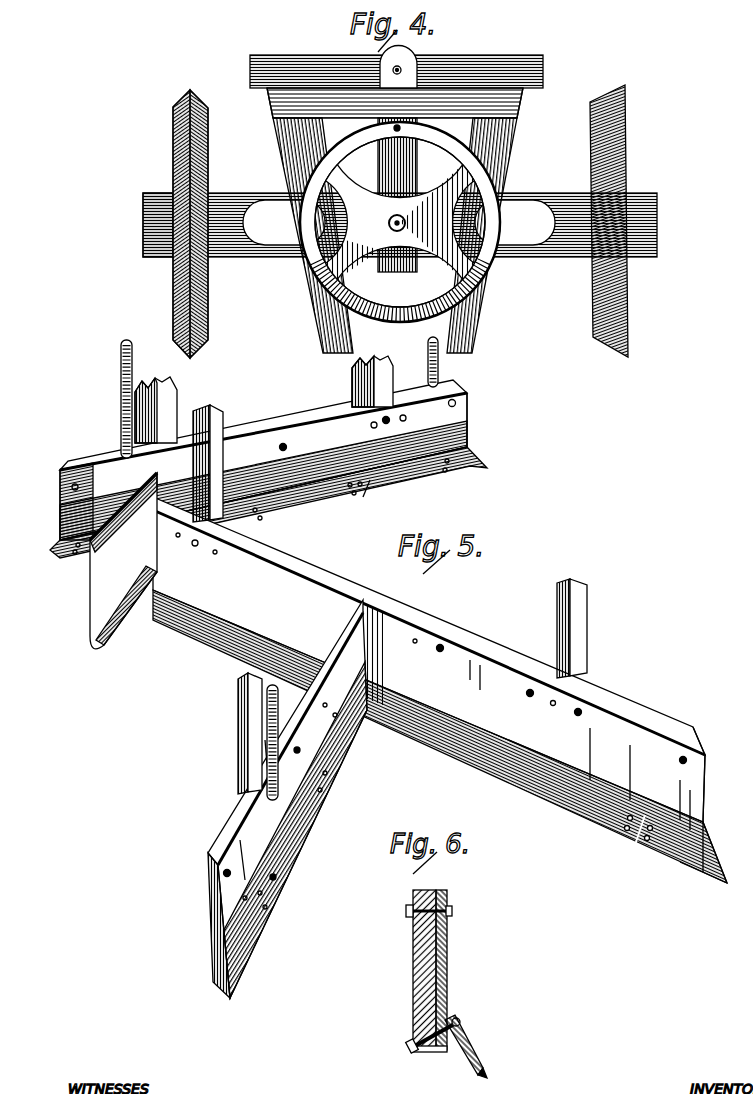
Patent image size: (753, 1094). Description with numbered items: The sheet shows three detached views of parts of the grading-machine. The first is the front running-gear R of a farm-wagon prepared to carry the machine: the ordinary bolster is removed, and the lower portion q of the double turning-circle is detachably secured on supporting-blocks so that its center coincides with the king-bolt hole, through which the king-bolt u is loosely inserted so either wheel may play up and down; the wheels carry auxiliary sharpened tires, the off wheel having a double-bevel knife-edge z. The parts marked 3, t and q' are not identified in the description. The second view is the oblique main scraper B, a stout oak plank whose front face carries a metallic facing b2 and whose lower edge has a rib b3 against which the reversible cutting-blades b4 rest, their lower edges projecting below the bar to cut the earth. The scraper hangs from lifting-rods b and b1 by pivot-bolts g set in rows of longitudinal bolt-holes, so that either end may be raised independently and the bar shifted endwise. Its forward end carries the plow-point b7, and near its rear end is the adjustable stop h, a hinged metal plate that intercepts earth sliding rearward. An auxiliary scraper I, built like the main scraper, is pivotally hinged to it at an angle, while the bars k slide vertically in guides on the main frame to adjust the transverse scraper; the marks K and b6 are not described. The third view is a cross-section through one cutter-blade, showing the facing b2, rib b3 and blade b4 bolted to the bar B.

In FIG. 4, the front running-gear R is at (400, 209).
In FIG. 4, the axle journal 3 is at (158, 257).
In FIG. 4, the lower portion of the double turning-circle q is at (399, 222).
In FIG. 4, the double-bevel knife-edge of tire z is at (400, 221).
In FIG. 4, the central post t is at (405, 195).
In FIG. 4, the spoked wheel q' is at (400, 222).
In FIG. 4, the king-bolt u is at (404, 222).
In FIG. 5, the rear beam K is at (268, 469).
In FIG. 5, the bars k is at (264, 399).
In FIG. 5, the main scraper B is at (429, 663).
In FIG. 6, the main scraper B is at (388, 1003).
In FIG. 5, the pivot-bolts g is at (376, 634).
In FIG. 5, the lifting-rod b is at (218, 424).
In FIG. 5, the lifting-rod b1 is at (590, 652).
In FIG. 5, the metallic facing b2 is at (440, 736).
In FIG. 6, the metallic facing b2 is at (441, 970).
In FIG. 5, the rib b3 is at (706, 862).
In FIG. 6, the rib b3 is at (443, 1055).
In FIG. 5, the plow-point b7 is at (715, 872).
In FIG. 5, the adjustable stop h is at (123, 561).
In FIG. 5, the auxiliary scraper I is at (282, 826).
In FIG. 6, the bolt b6 is at (462, 1021).
In FIG. 6, the cutting-blades b4 is at (478, 1055).